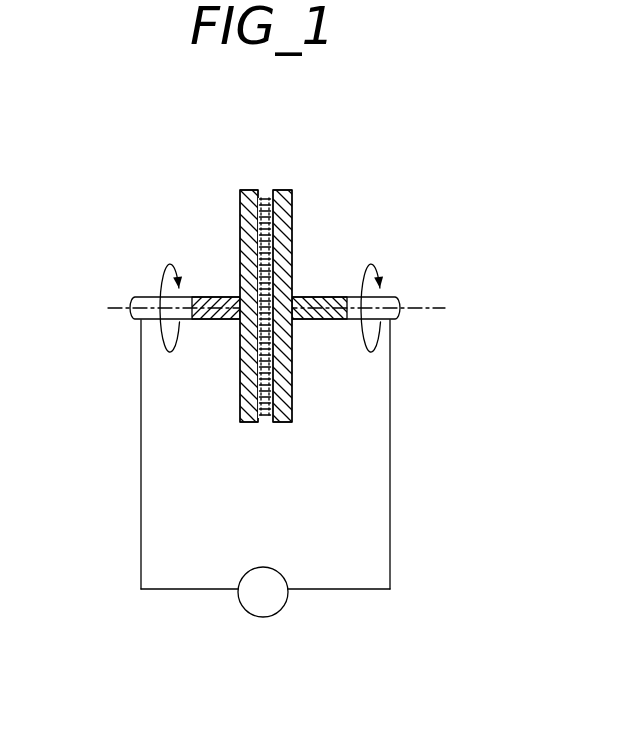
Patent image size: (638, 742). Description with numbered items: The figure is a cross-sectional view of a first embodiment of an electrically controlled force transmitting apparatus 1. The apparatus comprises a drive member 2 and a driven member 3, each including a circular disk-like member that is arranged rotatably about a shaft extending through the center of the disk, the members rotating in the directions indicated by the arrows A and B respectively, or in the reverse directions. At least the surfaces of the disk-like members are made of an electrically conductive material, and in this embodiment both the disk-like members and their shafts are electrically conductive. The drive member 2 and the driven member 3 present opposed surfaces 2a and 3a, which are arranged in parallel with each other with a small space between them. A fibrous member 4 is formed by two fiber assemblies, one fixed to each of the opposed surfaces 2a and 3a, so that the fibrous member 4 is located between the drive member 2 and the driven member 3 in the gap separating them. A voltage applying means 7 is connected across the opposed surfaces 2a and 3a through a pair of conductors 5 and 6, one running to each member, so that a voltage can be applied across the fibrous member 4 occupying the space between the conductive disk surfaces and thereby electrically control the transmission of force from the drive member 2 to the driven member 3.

The electrically controlled force transmitting apparatus 1 is at (219, 231).
The drive member 2 is at (318, 296).
The opposed surface of drive member 2a is at (260, 196).
The driven member 3 is at (216, 323).
The opposed surface of driven member 3a is at (263, 420).
The fibrous member 4 is at (275, 395).
The conductor 5 is at (390, 455).
The conductor 6 is at (141, 468).
The voltage applying means 7 is at (281, 610).
The direction of rotation of drive member A is at (428, 300).
The direction of rotation of driven member B is at (270, 292).